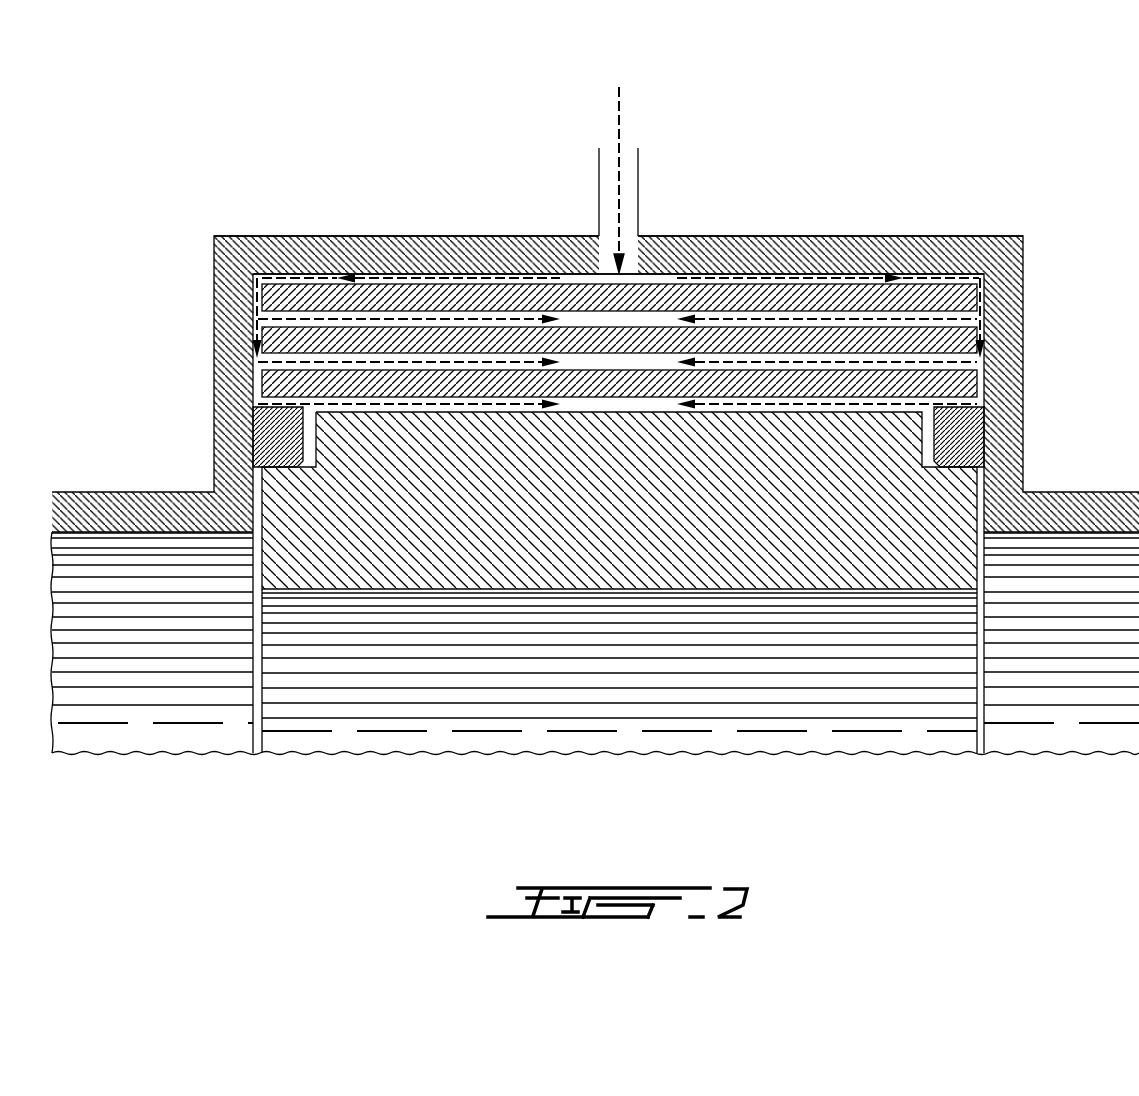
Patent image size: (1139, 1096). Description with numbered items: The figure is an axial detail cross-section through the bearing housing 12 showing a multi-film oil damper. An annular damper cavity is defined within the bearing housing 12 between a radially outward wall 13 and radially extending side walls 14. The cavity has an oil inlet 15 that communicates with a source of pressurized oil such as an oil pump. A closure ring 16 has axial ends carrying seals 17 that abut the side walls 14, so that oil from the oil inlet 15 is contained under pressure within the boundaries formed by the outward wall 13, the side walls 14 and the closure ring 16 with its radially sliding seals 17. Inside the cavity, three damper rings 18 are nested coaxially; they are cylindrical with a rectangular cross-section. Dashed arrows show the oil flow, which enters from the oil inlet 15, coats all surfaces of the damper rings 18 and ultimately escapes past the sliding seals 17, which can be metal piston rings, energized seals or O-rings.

The bearing housing 12 is at (832, 149).
The radially outward wall 13 is at (716, 236).
The radially extending side walls 14 is at (232, 330).
The oil inlet 15 is at (599, 176).
The closure ring 16 is at (662, 522).
The seals 17 is at (276, 438).
The damper rings 18 is at (302, 343).